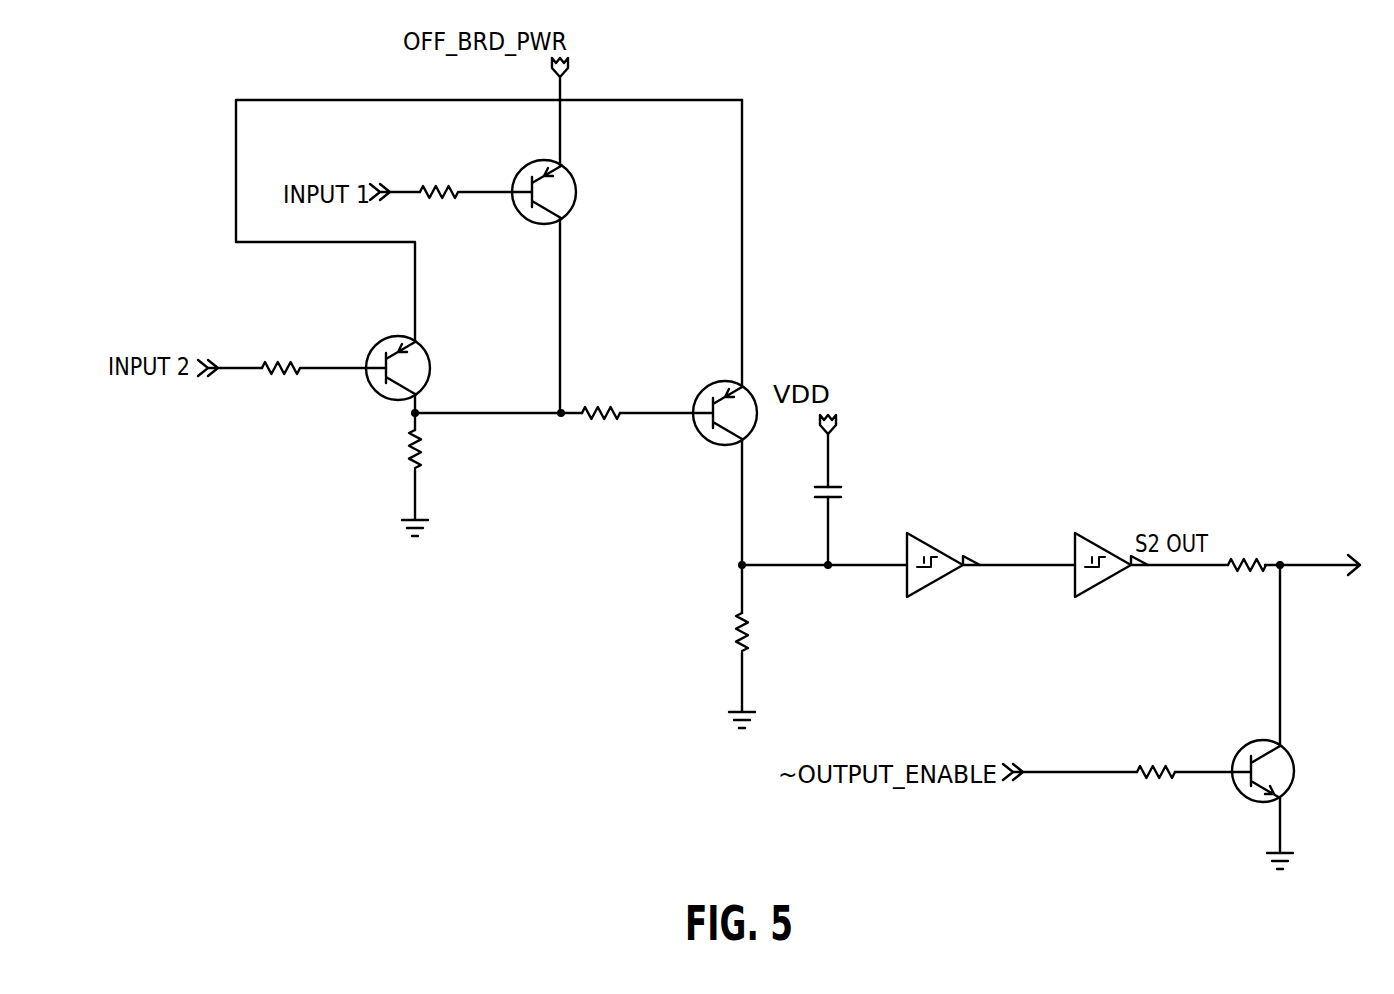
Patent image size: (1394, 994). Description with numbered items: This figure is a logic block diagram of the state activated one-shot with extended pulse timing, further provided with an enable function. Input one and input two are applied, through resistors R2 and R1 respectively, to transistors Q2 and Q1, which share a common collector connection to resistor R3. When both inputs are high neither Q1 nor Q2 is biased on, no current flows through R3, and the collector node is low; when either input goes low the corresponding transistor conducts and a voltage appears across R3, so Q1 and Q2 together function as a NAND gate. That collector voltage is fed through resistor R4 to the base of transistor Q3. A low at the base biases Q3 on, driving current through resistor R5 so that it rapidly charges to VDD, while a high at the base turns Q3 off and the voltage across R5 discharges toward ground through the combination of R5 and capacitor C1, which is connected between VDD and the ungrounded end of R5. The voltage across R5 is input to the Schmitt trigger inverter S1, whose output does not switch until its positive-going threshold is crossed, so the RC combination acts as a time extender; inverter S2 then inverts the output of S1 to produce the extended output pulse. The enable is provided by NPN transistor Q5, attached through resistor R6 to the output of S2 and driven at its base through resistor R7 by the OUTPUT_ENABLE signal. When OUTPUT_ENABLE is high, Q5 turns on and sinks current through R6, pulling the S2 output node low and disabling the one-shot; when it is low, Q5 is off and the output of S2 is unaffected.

The resistor R1 is at (324, 385).
The resistor R2 is at (476, 211).
The resistor R3 is at (398, 449).
The resistor R4 is at (601, 432).
The resistor R5 is at (721, 632).
The resistor R6 is at (1247, 541).
The resistor R7 is at (1158, 752).
The transistor Q1 is at (419, 368).
The transistor Q2 is at (566, 192).
The transistor Q3 is at (745, 424).
The NPN transistor Q5 is at (1284, 768).
The capacitor C1 is at (847, 494).
The Schmitt trigger inverter S1 is at (943, 552).
The inverter S2 is at (1111, 552).